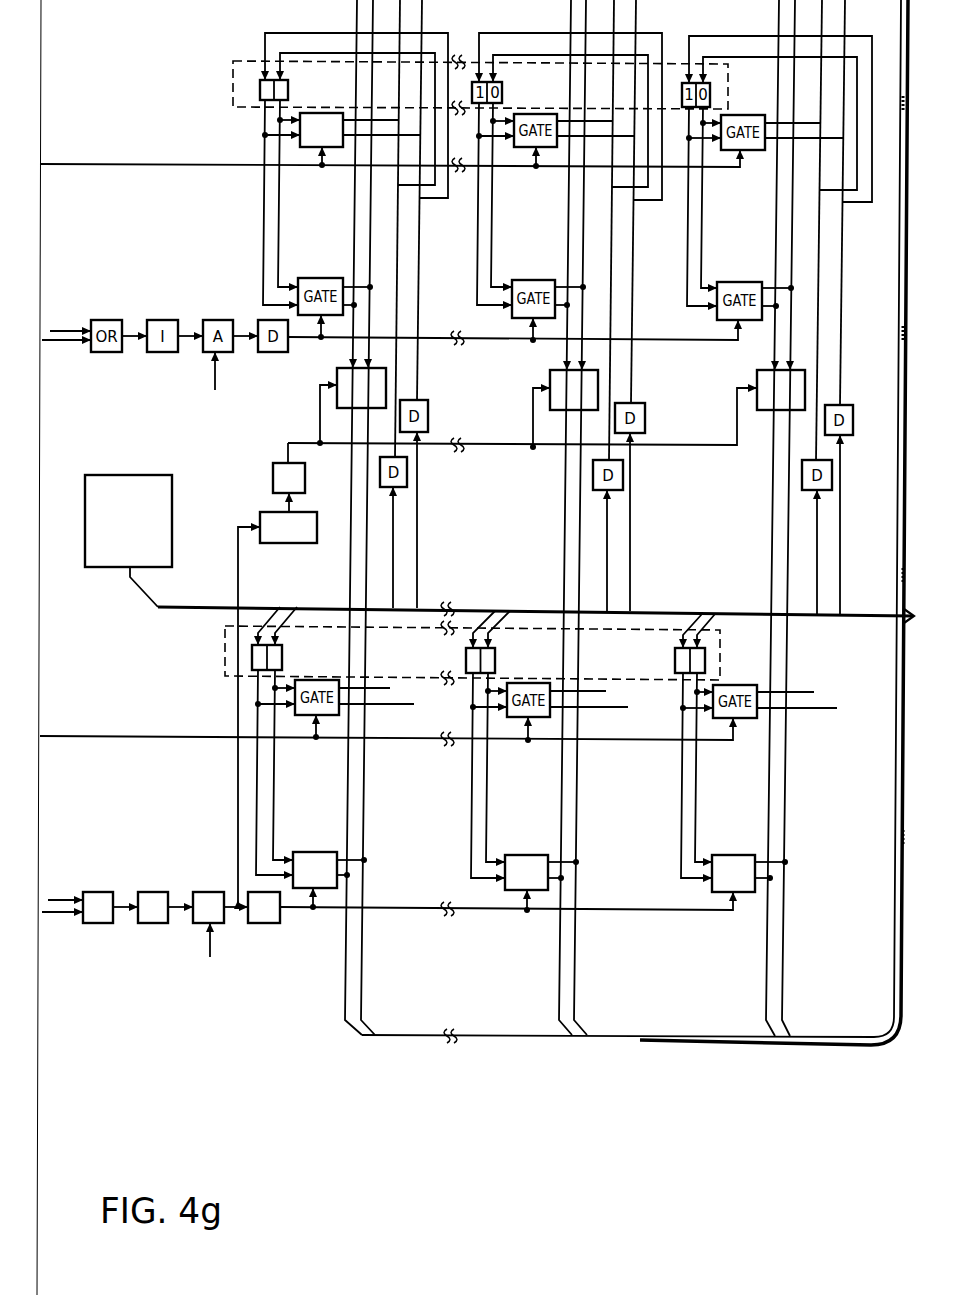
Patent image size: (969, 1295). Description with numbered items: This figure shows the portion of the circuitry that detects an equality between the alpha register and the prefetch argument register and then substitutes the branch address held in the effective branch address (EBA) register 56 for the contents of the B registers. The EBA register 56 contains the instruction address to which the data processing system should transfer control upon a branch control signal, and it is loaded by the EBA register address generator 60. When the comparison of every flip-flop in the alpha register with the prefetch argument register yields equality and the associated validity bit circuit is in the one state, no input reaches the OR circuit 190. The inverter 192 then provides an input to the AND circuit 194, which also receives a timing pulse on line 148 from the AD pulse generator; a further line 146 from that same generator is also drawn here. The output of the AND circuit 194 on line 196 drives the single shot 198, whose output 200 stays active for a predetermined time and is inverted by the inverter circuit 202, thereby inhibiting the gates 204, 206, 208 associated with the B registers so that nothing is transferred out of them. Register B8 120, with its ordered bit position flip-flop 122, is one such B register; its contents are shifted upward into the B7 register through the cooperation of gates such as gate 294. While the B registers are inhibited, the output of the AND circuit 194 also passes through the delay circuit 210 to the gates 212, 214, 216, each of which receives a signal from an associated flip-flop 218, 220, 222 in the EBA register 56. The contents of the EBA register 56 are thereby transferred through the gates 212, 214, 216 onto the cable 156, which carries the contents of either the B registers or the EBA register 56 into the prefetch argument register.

The register B8 120 is at (233, 77).
The flip-flop 122 is at (258, 100).
The gate 294 is at (310, 148).
The line 146 is at (215, 370).
The gate 204 is at (337, 370).
The gate 206 is at (550, 372).
The gate 208 is at (758, 372).
The inverter circuit 202 is at (273, 480).
The output 200 is at (293, 513).
The single shot 198 is at (271, 544).
The EBA register address generator 60 is at (132, 475).
The effective branch address (EBA) register 56 is at (225, 650).
The flip-flop 218 is at (282, 658).
The flip-flop 220 is at (495, 660).
The flip-flop 222 is at (675, 660).
The line 196 is at (238, 802).
The gate 212 is at (313, 852).
The gate 214 is at (527, 855).
The gate 216 is at (738, 849).
The OR circuit 190 is at (97, 892).
The inverter 192 is at (152, 892).
The AND circuit 194 is at (207, 892).
The line 148 is at (210, 950).
The delay circuit 210 is at (258, 924).
The cable 156 is at (848, 1047).